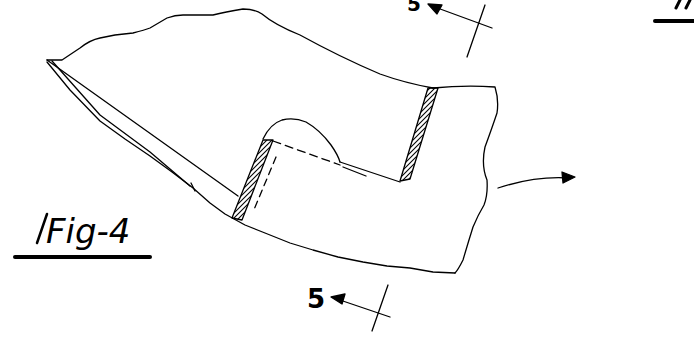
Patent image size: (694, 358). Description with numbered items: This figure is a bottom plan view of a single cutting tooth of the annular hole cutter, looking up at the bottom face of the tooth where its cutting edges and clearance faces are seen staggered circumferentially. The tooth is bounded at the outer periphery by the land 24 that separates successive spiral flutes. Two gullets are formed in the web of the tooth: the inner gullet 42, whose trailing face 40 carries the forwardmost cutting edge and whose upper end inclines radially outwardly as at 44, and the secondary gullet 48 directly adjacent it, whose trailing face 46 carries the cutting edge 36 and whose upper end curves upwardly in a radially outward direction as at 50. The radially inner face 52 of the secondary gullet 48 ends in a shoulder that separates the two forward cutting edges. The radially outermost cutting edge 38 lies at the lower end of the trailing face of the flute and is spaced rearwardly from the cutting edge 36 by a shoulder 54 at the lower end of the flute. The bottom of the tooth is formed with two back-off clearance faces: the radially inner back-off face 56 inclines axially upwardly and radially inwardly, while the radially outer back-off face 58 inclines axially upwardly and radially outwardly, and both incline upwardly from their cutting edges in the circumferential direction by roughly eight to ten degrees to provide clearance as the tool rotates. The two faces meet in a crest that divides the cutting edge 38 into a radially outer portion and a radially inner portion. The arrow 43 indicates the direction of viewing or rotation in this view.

The land 24 is at (318, 232).
The cutting edge 36 is at (233, 103).
The cutting edge 38 is at (233, 218).
The trailing face 40 is at (182, 156).
The inner gullet 42 is at (480, 100).
The direction arrow 43 is at (278, 155).
The upper end of gullet 44 is at (343, 170).
The trailing face 46 is at (308, 120).
The secondary gullet 48 is at (432, 108).
The upper end of secondary gullet 50 is at (253, 200).
The radially inner face 52 is at (433, 268).
The shoulder 54 is at (397, 63).
The radially inner back-off face 56 is at (138, 150).
The radially outer back-off face 58 is at (218, 212).